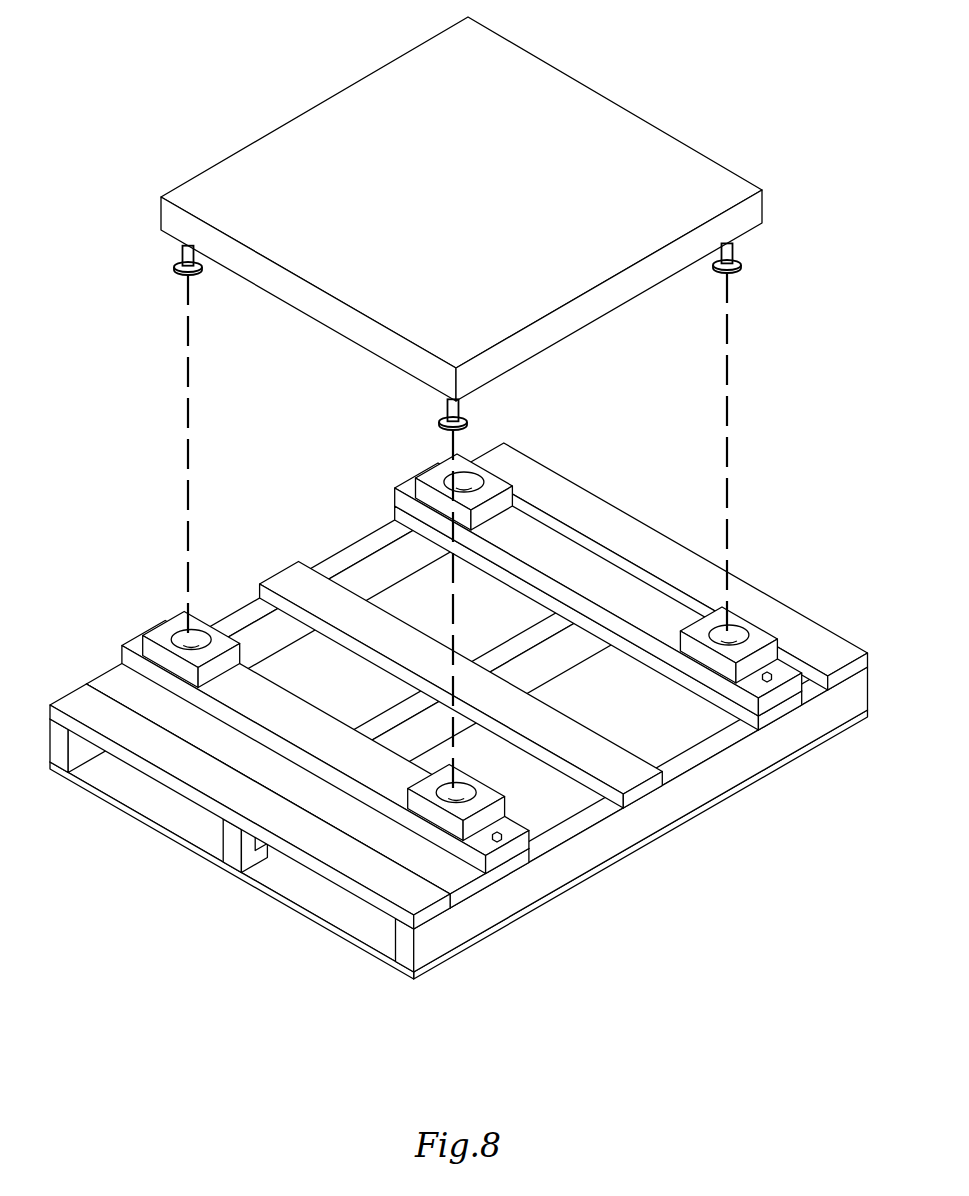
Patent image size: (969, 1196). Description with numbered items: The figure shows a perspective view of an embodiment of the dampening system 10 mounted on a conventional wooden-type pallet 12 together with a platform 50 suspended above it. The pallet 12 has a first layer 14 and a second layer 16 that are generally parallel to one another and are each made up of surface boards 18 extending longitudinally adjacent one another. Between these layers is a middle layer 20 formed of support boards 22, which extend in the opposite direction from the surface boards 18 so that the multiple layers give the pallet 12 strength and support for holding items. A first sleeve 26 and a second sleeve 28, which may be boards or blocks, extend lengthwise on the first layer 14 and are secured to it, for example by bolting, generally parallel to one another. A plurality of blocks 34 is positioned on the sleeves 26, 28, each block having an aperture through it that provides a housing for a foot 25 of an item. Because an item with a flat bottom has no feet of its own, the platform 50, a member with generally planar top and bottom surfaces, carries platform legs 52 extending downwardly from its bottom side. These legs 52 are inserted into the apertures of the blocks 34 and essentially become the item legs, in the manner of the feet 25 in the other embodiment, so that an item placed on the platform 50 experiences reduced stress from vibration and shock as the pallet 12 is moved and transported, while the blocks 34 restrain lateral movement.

The dampening system 10 is at (448, 498).
The pallet 12 is at (449, 711).
The first layer 14 is at (78, 700).
The second layer 16 is at (459, 739).
The surface boards 18 is at (350, 943).
The middle layer 20 is at (196, 817).
The support boards 22 is at (735, 773).
The foot 25 is at (162, 625).
The first sleeve 26 is at (780, 672).
The second sleeve 28 is at (505, 828).
The blocks 34 is at (490, 490).
The platform 50 is at (575, 118).
The platform legs 52 is at (180, 268).